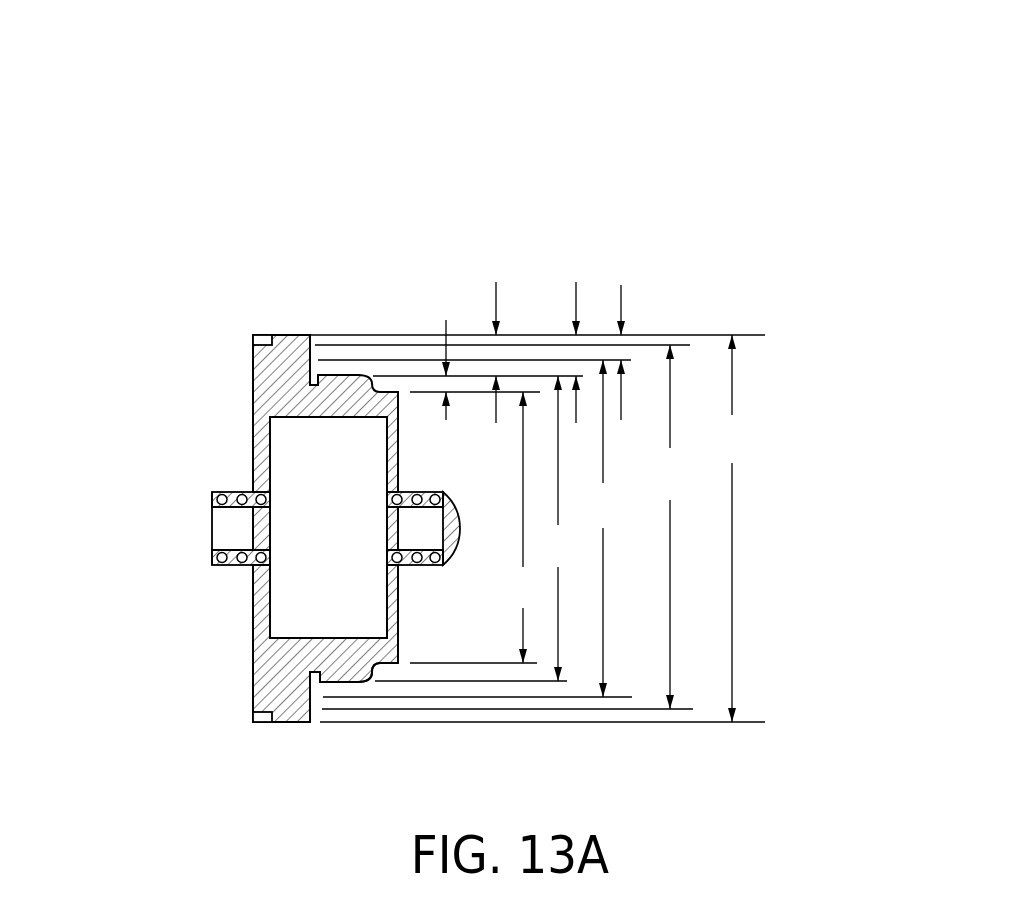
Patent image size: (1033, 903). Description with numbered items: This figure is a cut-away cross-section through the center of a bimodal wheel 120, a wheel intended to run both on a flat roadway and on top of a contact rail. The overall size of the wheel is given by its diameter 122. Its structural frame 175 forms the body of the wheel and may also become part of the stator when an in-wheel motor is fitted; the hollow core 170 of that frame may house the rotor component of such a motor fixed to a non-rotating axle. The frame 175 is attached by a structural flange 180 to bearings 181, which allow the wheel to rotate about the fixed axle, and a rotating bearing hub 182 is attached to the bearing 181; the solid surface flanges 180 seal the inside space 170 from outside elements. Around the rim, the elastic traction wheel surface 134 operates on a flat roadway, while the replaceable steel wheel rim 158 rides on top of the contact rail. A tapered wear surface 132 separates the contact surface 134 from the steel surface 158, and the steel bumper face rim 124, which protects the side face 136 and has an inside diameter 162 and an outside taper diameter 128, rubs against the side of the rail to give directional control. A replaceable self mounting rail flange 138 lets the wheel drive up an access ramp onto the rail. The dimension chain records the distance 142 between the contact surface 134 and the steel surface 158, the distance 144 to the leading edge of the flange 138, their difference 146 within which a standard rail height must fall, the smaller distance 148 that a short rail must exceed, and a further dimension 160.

The bimodal wheel 120 is at (412, 177).
The wheel diameter 122 is at (537, 528).
The steel bumper face rim 124 is at (323, 375).
The outside taper diameter 128 is at (504, 527).
The tapered wear surface 132 is at (318, 362).
The traction wheel surface 134 is at (275, 335).
The side face 136 is at (312, 335).
The self mounting rail flange 138 is at (372, 672).
The distance 142 is at (577, 286).
The distance 144 is at (497, 285).
The distance 146 is at (446, 320).
The distance 148 is at (621, 292).
The replaceable steel wheel rim 158 is at (337, 682).
The shoulder diameter 160 is at (476, 527).
The inside diameter 162 is at (477, 528).
The hollow core 170 is at (293, 535).
The structural frame 175 is at (282, 385).
The structural flange 180 is at (252, 427).
The bearings 181 is at (210, 494).
The rotating bearing hub 182 is at (440, 527).